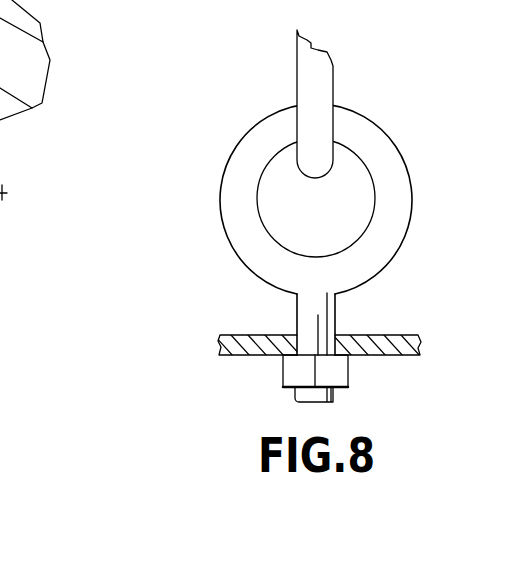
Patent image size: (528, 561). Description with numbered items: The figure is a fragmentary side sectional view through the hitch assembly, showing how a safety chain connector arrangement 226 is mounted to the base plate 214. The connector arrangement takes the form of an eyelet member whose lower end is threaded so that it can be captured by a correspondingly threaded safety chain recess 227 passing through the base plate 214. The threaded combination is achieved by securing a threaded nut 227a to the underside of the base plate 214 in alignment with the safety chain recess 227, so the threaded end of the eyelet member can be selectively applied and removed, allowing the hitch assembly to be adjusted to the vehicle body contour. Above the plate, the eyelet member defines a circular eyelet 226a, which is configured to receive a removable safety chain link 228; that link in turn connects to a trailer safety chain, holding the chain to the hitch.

The base plate 214 is at (392, 336).
The safety chain connector arrangement 226 is at (412, 200).
The eyelet 226a is at (312, 254).
The safety chain recess 227 is at (290, 347).
The threaded nut 227a is at (446, 422).
The removable safety chain link 228 is at (297, 60).